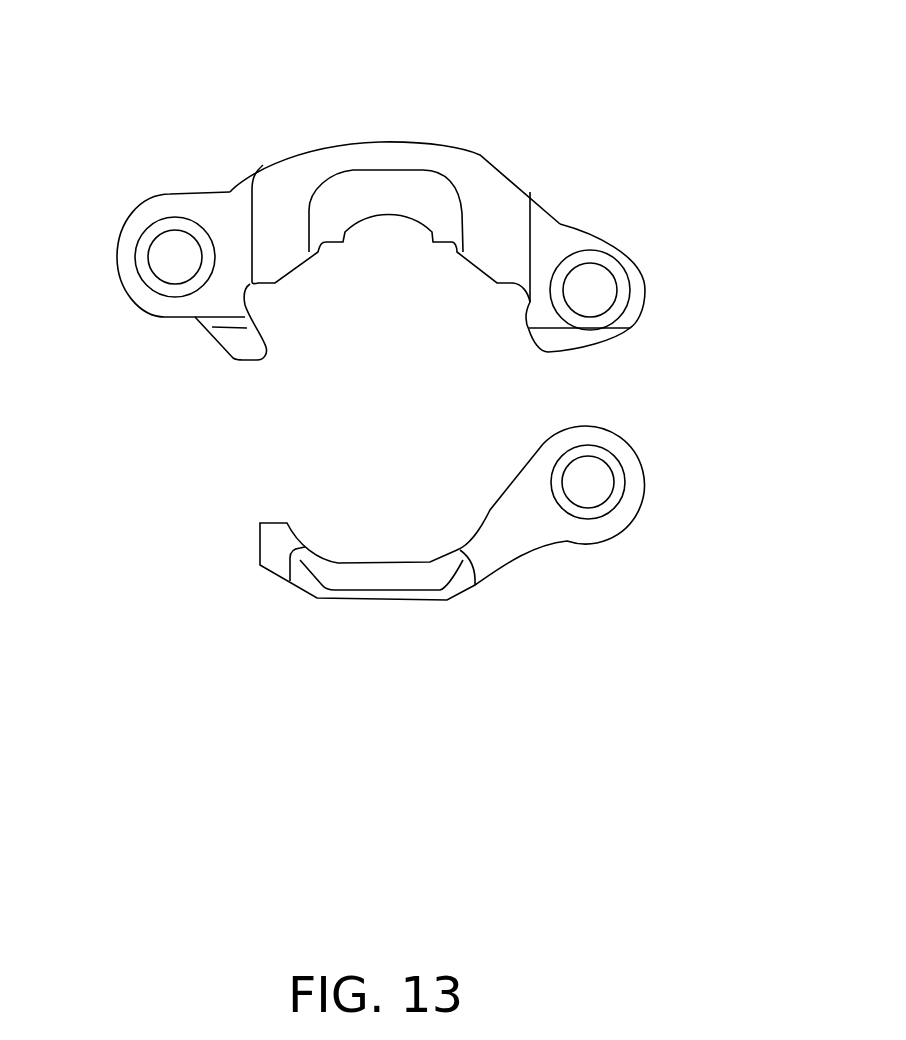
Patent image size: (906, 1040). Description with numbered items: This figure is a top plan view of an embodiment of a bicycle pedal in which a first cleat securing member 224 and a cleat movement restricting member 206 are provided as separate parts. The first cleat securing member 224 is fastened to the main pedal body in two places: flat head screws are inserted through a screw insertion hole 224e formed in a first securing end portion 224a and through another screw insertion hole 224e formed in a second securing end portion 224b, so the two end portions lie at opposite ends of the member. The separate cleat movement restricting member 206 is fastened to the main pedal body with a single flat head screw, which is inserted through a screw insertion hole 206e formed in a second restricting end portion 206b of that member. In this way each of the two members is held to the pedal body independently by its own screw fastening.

The first cleat securing member 224 is at (490, 129).
The first securing end portion 224a is at (220, 215).
The second securing end portion 224b is at (558, 237).
The screw insertion hole 224e is at (148, 262).
The cleat movement restricting member 206 is at (382, 623).
The second restricting end portion 206b is at (547, 525).
The screw insertion hole 206e is at (605, 504).